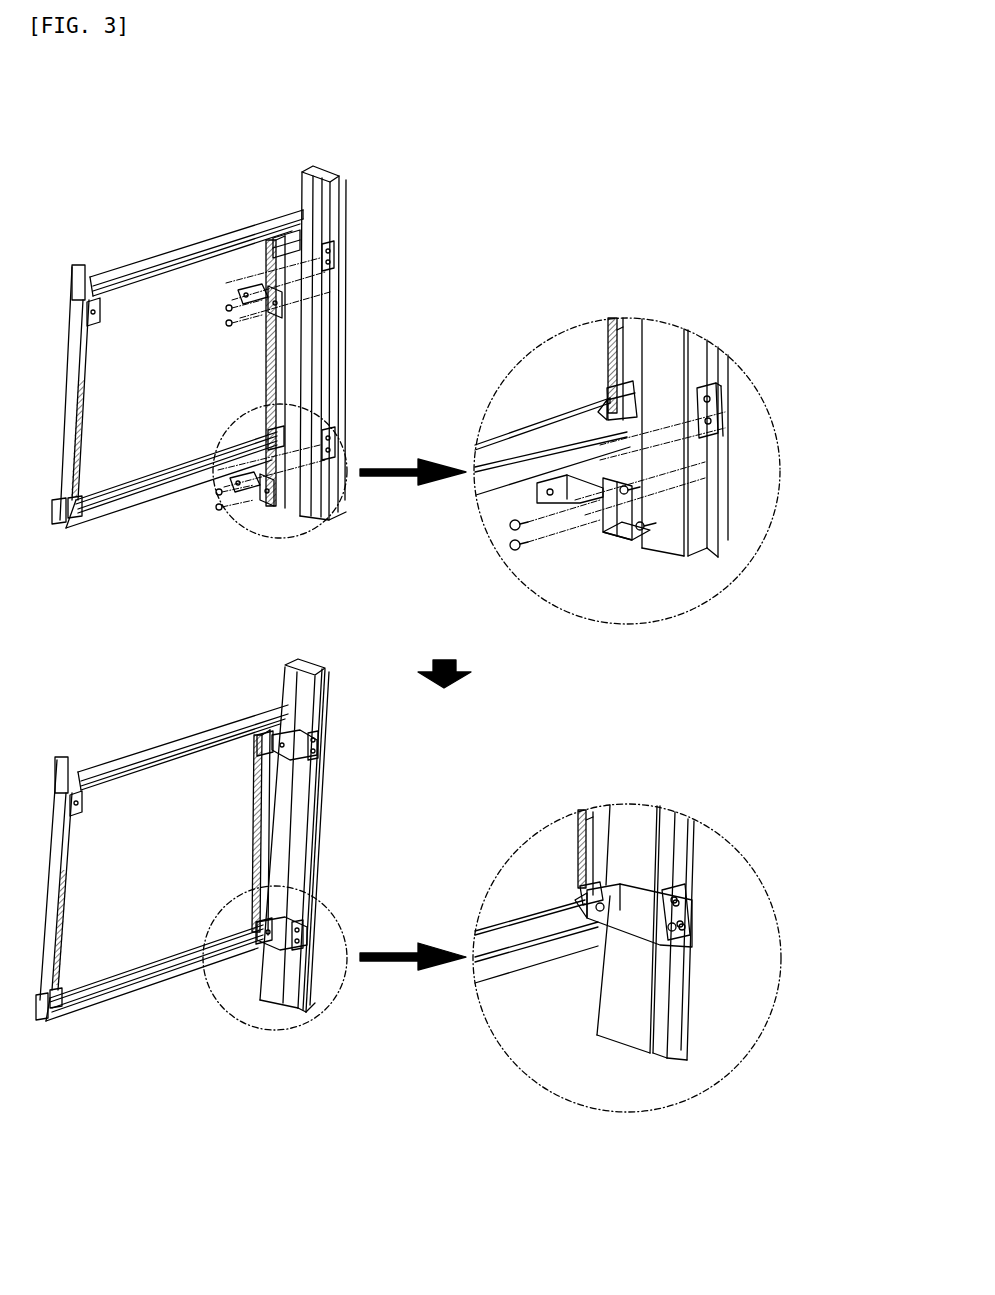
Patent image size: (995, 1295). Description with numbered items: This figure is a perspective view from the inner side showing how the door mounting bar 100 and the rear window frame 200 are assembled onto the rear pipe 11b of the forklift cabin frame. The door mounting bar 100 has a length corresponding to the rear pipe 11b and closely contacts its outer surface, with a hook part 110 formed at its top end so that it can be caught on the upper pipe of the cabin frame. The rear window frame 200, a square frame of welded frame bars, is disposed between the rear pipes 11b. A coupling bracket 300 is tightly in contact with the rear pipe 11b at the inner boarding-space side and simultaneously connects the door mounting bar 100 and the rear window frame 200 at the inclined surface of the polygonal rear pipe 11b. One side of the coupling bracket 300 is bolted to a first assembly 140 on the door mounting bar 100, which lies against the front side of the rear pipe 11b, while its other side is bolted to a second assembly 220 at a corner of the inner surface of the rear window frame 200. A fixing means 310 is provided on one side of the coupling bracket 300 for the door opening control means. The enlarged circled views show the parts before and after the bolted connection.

The rear window frame 200 is at (168, 257).
The second assembly 220 is at (262, 248).
The rear pipe 11b is at (298, 180).
The hook part 110 is at (322, 170).
The door mounting bar 100 is at (337, 303).
The first assembly 140 is at (332, 257).
The coupling bracket 300 is at (278, 338).
The fixing means 310 is at (667, 515).